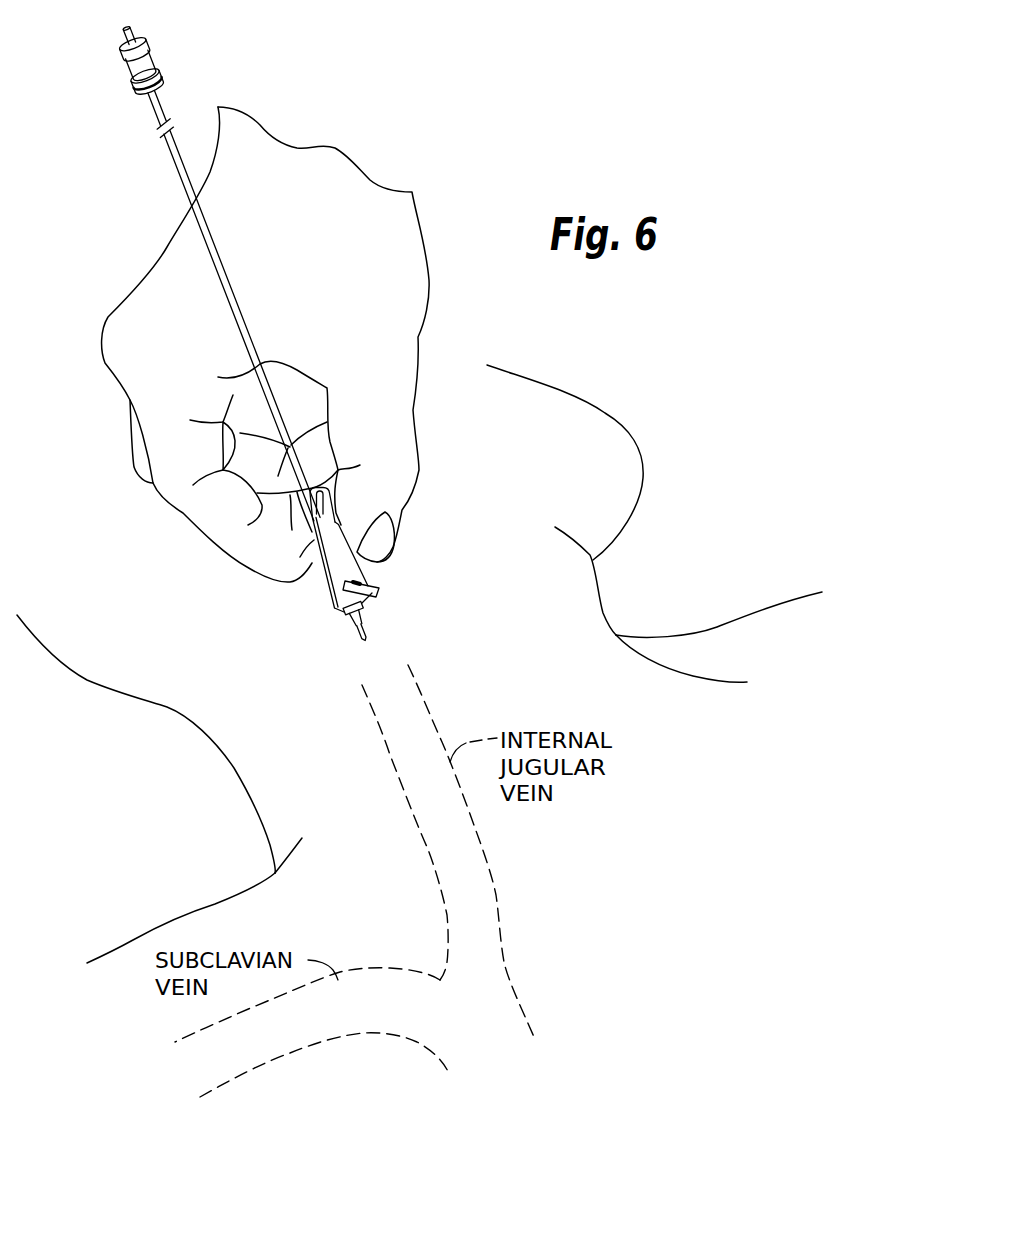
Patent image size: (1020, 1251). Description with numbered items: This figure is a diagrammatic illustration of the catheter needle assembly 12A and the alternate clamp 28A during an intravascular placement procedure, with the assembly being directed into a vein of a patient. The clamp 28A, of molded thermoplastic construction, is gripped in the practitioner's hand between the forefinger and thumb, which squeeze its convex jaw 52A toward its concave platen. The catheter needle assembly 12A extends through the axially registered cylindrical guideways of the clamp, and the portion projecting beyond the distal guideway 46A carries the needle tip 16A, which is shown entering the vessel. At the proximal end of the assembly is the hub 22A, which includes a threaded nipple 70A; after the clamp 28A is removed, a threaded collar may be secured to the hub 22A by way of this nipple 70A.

The hub 22A is at (159, 74).
The threaded nipple 70A is at (137, 92).
The catheter needle assembly 12A is at (233, 297).
The alternate clamp 28A is at (347, 593).
The maxillary convex jaw 52A is at (358, 566).
The distal guideway 46A is at (369, 603).
The needle tip 16A is at (324, 661).